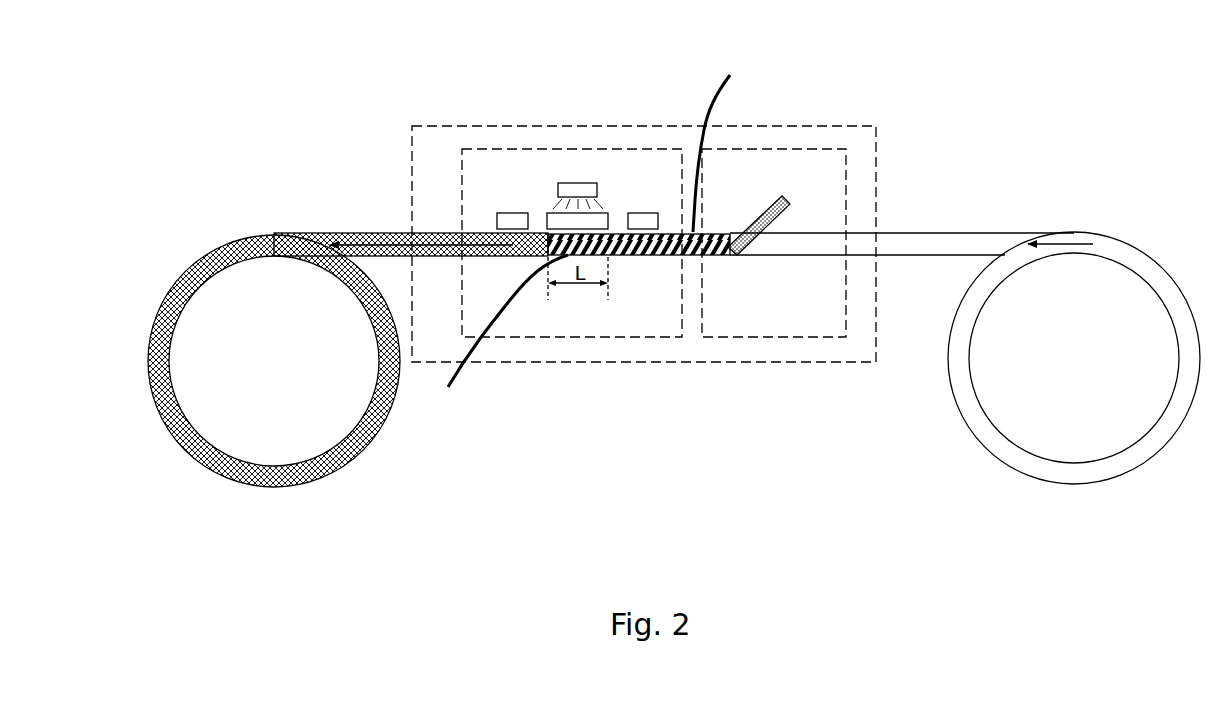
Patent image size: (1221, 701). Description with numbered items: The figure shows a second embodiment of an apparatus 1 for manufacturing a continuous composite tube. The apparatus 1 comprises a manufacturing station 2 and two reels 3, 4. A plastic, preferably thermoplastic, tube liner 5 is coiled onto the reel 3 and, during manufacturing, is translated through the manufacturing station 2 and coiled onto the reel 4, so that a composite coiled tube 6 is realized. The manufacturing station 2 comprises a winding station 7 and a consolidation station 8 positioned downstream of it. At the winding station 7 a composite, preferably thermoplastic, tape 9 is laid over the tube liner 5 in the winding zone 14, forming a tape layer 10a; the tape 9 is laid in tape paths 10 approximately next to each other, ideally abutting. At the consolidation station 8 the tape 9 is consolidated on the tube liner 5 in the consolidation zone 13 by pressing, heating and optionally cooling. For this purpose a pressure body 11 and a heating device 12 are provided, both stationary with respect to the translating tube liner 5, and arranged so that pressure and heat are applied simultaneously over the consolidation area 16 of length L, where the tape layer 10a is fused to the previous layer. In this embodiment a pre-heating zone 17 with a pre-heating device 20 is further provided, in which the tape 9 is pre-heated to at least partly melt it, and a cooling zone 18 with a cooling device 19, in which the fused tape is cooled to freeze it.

The apparatus 1 is at (349, 104).
The manufacturing station 2 is at (862, 114).
The reel 3 is at (1077, 410).
The reel 4 is at (273, 412).
The tube liner 5 is at (968, 243).
The composite tube 6 is at (302, 235).
The winding station 7 is at (825, 148).
The consolidation station 8 is at (598, 148).
The tape 9 is at (768, 200).
The tape paths 10 is at (655, 256).
The tape layer 10a is at (733, 132).
The pressure body 11 is at (552, 217).
The heating device 12 is at (573, 185).
The consolidation zone 13 is at (540, 272).
The winding zone 14 is at (718, 262).
The consolidation area 16 is at (498, 336).
The pre-heating zone 17 is at (645, 204).
The cooling zone 18 is at (505, 204).
The cooling device 19 is at (508, 217).
The pre-heating device 20 is at (656, 214).